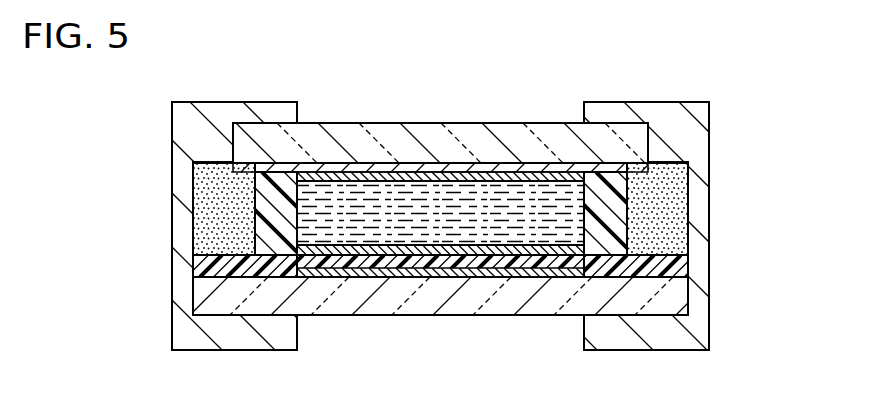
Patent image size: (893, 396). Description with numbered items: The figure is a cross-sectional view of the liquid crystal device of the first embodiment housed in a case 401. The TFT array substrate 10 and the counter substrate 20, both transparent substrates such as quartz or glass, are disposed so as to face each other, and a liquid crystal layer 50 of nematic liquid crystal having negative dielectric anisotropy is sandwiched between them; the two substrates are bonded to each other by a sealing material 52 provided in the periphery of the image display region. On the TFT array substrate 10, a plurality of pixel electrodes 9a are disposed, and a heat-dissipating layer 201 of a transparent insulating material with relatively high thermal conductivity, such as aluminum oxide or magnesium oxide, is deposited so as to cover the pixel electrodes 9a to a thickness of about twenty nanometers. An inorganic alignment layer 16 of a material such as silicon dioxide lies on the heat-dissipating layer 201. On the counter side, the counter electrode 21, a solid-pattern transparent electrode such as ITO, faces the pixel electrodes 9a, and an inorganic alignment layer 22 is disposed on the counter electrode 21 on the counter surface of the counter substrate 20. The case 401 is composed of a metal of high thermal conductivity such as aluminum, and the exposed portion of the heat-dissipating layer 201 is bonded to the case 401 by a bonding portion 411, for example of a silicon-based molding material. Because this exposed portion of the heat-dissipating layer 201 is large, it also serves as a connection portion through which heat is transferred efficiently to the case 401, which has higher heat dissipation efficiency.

The case 401 is at (181, 123).
The bonding portion 411 is at (200, 190).
The sealing material 52 is at (262, 237).
The counter substrate 20 is at (343, 132).
The counter electrode 21 is at (455, 167).
The inorganic alignment layer 22 is at (540, 175).
The pixel electrodes 9a is at (488, 272).
The inorganic alignment layer 16 is at (422, 250).
The heat-dissipating layer 201 is at (683, 265).
The TFT array substrate 10 is at (543, 308).
The liquid crystal layer 50 is at (308, 240).